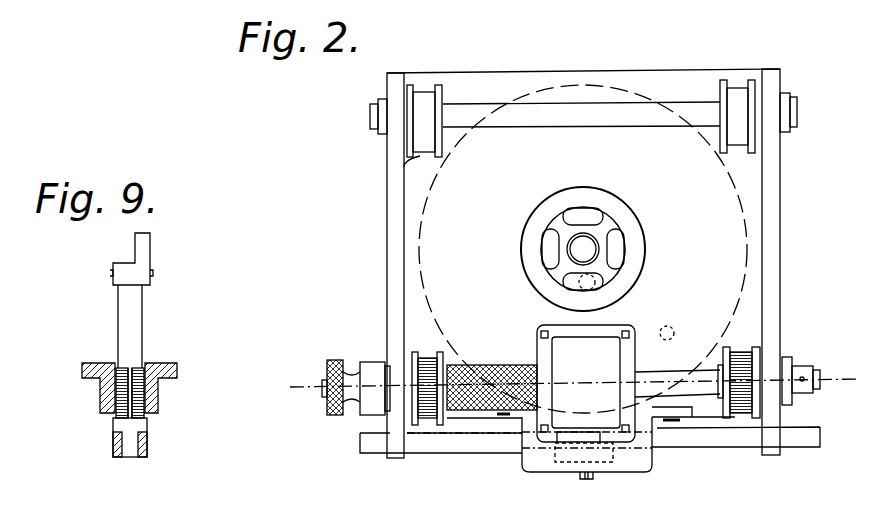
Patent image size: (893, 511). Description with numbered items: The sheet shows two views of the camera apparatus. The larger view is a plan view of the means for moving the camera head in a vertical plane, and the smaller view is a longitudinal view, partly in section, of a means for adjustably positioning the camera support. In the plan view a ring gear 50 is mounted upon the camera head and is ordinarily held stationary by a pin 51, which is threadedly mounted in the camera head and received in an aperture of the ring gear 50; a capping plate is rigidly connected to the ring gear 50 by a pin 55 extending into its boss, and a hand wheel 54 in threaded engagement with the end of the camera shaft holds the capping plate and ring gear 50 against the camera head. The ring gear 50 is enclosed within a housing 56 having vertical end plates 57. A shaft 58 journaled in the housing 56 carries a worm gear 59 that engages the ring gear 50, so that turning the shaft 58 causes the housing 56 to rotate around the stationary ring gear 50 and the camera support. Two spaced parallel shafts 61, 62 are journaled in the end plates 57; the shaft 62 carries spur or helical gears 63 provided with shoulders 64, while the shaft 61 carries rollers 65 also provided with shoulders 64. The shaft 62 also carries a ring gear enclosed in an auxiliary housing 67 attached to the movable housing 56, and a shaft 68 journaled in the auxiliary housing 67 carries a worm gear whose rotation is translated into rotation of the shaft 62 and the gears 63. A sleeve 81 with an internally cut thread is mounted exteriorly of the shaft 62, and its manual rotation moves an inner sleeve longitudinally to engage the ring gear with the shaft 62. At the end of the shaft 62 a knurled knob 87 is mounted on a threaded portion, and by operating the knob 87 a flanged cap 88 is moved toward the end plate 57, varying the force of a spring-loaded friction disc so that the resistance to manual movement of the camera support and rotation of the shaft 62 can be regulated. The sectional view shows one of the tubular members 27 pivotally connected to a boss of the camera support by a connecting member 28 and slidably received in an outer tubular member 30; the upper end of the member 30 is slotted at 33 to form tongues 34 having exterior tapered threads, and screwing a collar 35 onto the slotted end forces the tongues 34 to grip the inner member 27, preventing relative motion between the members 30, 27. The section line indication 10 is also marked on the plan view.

In FIG. 2, the section line 10 is at (298, 392).
In FIG. 2, the ring gear 50 is at (432, 198).
In FIG. 2, the pin 51 is at (699, 313).
In FIG. 2, the hand wheel 54 is at (640, 232).
In FIG. 2, the pin 55 is at (598, 285).
In FIG. 2, the housing 56 is at (487, 72).
In FIG. 2, the end plates 57 is at (388, 245).
In FIG. 2, the shaft 58 is at (680, 440).
In FIG. 2, the worm gear 59 is at (612, 471).
In FIG. 2, the shaft 61 is at (597, 120).
In FIG. 2, the shaft 62 is at (665, 372).
In FIG. 2, the spur or helical gears 63 is at (428, 418).
In FIG. 2, the shoulders 64 is at (438, 158).
In FIG. 2, the rollers 65 is at (424, 90).
In FIG. 2, the auxiliary housing 67 is at (538, 350).
In FIG. 2, the shaft 68 is at (580, 468).
In FIG. 2, the sleeve 81 is at (477, 403).
In FIG. 2, the knurled knob 87 is at (330, 360).
In FIG. 2, the flanged cap 88 is at (372, 408).
In FIG. 9, the tubular members 27 is at (140, 316).
In FIG. 9, the connecting members 28 is at (150, 256).
In FIG. 9, the tubular members 30 is at (148, 446).
In FIG. 9, the slots 33 is at (134, 370).
In FIG. 9, the tongues 34 is at (124, 398).
In FIG. 9, the collars 35 is at (178, 373).